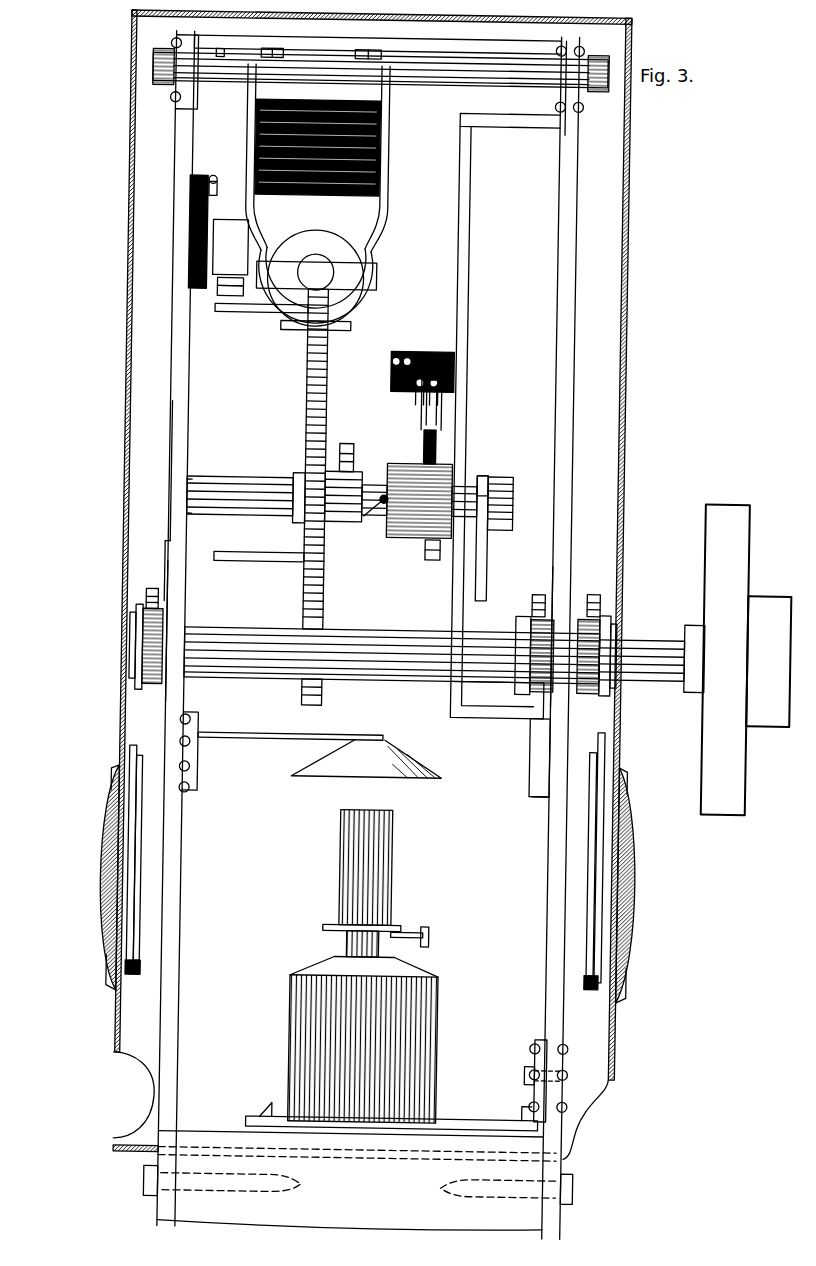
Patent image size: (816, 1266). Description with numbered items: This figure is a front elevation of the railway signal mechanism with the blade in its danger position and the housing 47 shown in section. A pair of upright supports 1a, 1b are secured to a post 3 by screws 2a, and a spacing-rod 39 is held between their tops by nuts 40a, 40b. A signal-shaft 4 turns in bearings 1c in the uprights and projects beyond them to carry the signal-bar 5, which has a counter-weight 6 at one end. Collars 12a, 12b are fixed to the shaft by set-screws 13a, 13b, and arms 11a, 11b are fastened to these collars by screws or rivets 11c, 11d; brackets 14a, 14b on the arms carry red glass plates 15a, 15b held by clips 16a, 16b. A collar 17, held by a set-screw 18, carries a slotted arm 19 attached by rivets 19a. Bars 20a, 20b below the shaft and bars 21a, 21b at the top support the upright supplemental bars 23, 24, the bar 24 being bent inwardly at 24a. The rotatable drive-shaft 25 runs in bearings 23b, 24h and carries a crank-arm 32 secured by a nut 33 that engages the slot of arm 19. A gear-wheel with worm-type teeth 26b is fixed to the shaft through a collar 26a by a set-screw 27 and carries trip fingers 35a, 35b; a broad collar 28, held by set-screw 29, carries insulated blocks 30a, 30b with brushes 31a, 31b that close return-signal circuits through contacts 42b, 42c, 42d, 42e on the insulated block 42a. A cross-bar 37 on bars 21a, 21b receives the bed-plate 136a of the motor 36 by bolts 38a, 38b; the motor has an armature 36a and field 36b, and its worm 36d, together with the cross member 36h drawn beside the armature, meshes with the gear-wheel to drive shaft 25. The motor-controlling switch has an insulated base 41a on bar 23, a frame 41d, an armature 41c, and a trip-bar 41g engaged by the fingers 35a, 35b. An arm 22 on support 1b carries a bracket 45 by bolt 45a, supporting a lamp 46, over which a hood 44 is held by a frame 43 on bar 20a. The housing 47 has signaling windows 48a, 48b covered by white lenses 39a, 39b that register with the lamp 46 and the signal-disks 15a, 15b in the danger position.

The upright support 1a is at (195, 382).
The upright support 1b is at (562, 922).
The bearing 1c is at (196, 624).
The screw 2a is at (590, 1206).
The post 3 is at (357, 1181).
The signal-shaft 4 is at (265, 628).
The signal-bar 5 is at (690, 618).
The counter-weight 6 is at (766, 592).
The arm 11a is at (152, 648).
The arm 11b is at (612, 680).
The screw or rivet 11c is at (140, 630).
The screw or rivet 11d is at (628, 624).
The collar 12a is at (150, 678).
The collar 12b is at (606, 690).
The set-screw 13a is at (158, 590).
The set-screw 13b is at (612, 592).
The bracket 14a is at (142, 748).
The bracket 14b is at (618, 740).
The glass plate 15a is at (156, 838).
The glass plate 15b is at (610, 812).
The clip 16a is at (150, 975).
The clip 16b is at (606, 982).
The collar 17 is at (540, 714).
The set-screw 18 is at (545, 590).
The arm or lever 19 is at (530, 630).
The rivet or screw 19a is at (540, 658).
The bar 20a is at (210, 722).
The bar 20b is at (548, 770).
The bar 21a is at (198, 103).
The bar 21b is at (563, 130).
The arm 22 is at (550, 1040).
The supplemental supporting-bar 23 is at (196, 428).
The bearing 23b is at (196, 478).
The supplemental supporting-bar 24 is at (468, 256).
The inwardly bent portion 24a is at (480, 730).
The bearing 24h is at (478, 482).
The rotatable drive or power shaft 25 is at (258, 472).
The collar 26a is at (350, 522).
The peripheral teeth 26b is at (334, 600).
The set-screw 27 is at (354, 440).
The broad collar 28 is at (408, 535).
The set-screw 29 is at (440, 556).
The insulated radial block 30a is at (430, 444).
The insulated radial block 30b is at (380, 516).
The circuit-closing brush 31a is at (428, 406).
The circuit-closing brush 31b is at (388, 492).
The crank-arm 32 is at (497, 552).
The nut 33 is at (512, 476).
The trip finger or pin 35a is at (310, 335).
The trip finger or pin 35b is at (270, 560).
The motor 36 is at (393, 137).
The armature 36a is at (358, 248).
The field 36b is at (384, 160).
The worm 36d is at (319, 252).
The cross bar 36h is at (382, 272).
The cross-bar 37 is at (452, 36).
The bolt 38a is at (268, 44).
The bolt 38b is at (378, 44).
The spacing-rod 39 is at (448, 82).
The glass cover 39a is at (118, 860).
The glass cover 39b is at (644, 852).
The nut 40a is at (160, 50).
The nut 40b is at (600, 86).
The insulated base 41a is at (192, 228).
The armature 41c is at (225, 290).
The frame 41d is at (229, 225).
The trip-bar 41g is at (237, 296).
The insulated block 42a is at (428, 350).
The contact 42b is at (399, 362).
The contact 42c is at (410, 364).
The contact 42d is at (452, 374).
The contact 42e is at (448, 394).
The frame 43 is at (296, 738).
The hood 44 is at (378, 772).
The bracket 45 is at (502, 1114).
The bolt 45a is at (540, 1068).
The lamp 46 is at (306, 1026).
The housing 47 is at (634, 1028).
The signaling window 48a is at (120, 940).
The signaling window 48b is at (642, 945).
The attaching bar or bed-plate 136a is at (322, 46).